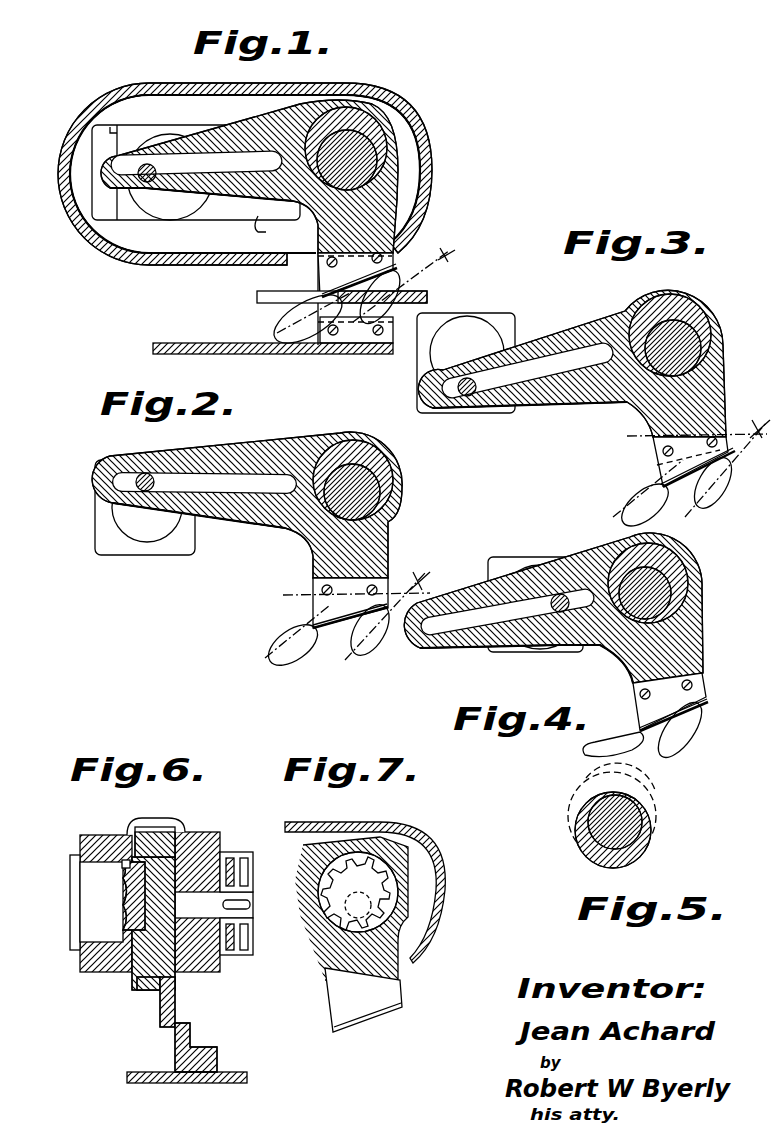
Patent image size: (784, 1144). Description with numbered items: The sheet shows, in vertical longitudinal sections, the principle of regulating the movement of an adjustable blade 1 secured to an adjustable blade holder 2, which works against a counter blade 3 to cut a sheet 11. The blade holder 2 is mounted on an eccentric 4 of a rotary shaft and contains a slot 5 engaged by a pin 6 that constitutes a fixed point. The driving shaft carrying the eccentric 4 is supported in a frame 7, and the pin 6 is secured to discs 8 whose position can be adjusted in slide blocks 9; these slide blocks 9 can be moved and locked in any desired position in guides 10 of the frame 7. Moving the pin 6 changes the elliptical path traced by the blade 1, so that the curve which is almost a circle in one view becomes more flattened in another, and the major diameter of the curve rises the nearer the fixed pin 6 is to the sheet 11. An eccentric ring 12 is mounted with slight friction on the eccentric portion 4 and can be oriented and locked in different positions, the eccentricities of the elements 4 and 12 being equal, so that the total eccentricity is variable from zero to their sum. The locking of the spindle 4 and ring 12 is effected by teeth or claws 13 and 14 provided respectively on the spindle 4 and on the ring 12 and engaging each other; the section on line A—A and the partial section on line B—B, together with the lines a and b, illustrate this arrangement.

In FIG. 1, the blade 1 is at (355, 275).
In FIG. 3, the blade 1 is at (697, 460).
In FIG. 2, the blade 1 is at (356, 603).
In FIG. 4, the blade 1 is at (669, 701).
In FIG. 6, the blade 1 is at (177, 1000).
In FIG. 7, the blade 1 is at (363, 1000).
In FIG. 1, the adjustable blade holder 2 is at (367, 216).
In FIG. 3, the adjustable blade holder 2 is at (648, 409).
In FIG. 2, the adjustable blade holder 2 is at (323, 549).
In FIG. 4, the adjustable blade holder 2 is at (628, 662).
In FIG. 6, the adjustable blade holder 2 is at (145, 985).
In FIG. 7, the adjustable blade holder 2 is at (340, 953).
In FIG. 1, the counter blade 3 is at (273, 335).
In FIG. 6, the counter blade 3 is at (192, 1030).
In FIG. 1, the eccentric 4 is at (373, 165).
In FIG. 3, the eccentric 4 is at (683, 338).
In FIG. 2, the eccentric 4 is at (367, 488).
In FIG. 4, the eccentric 4 is at (680, 592).
In FIG. 5, the eccentric 4 is at (623, 812).
In FIG. 6, the eccentric 4 is at (166, 902).
In FIG. 7, the eccentric 4 is at (355, 893).
In FIG. 1, the slot 5 is at (196, 164).
In FIG. 3, the slot 5 is at (527, 370).
In FIG. 2, the slot 5 is at (204, 485).
In FIG. 4, the slot 5 is at (507, 616).
In FIG. 1, the pin 6 is at (147, 182).
In FIG. 3, the pin 6 is at (470, 396).
In FIG. 2, the pin 6 is at (145, 476).
In FIG. 4, the pin 6 is at (560, 594).
In FIG. 1, the frame 7 is at (203, 86).
In FIG. 6, the frame 7 is at (100, 838).
In FIG. 7, the frame 7 is at (323, 822).
In FIG. 1, the discs 8 is at (177, 207).
In FIG. 3, the discs 8 is at (467, 353).
In FIG. 2, the discs 8 is at (160, 527).
In FIG. 4, the discs 8 is at (527, 562).
In FIG. 1, the slide blocks 9 is at (145, 130).
In FIG. 3, the slide blocks 9 is at (500, 320).
In FIG. 2, the slide blocks 9 is at (110, 540).
In FIG. 4, the slide blocks 9 is at (563, 655).
In FIG. 1, the guides 10 is at (112, 126).
In FIG. 1, the sheet 11 is at (429, 297).
In FIG. 1, the eccentric ring 12 is at (357, 123).
In FIG. 3, the eccentric ring 12 is at (680, 312).
In FIG. 2, the eccentric ring 12 is at (370, 463).
In FIG. 4, the eccentric ring 12 is at (663, 560).
In FIG. 5, the eccentric ring 12 is at (613, 866).
In FIG. 6, the eccentric ring 12 is at (165, 848).
In FIG. 7, the eccentric ring 12 is at (360, 855).
In FIG. 6, the teeth or claws 13 is at (128, 923).
In FIG. 7, the teeth or claws 13 is at (330, 868).
In FIG. 6, the teeth or claws 14 is at (126, 866).
In FIG. 7, the teeth or claws 14 is at (355, 867).
In FIG. 1, the needle line a is at (327, 283).
In FIG. 3, the needle line a is at (663, 477).
In FIG. 2, the needle line a is at (317, 617).
In FIG. 4, the needle line a is at (640, 721).
In FIG. 1, the needle line b is at (385, 268).
In FIG. 3, the needle line b is at (728, 456).
In FIG. 2, the needle line b is at (382, 600).
In FIG. 4, the needle line b is at (700, 692).
In FIG. 1, the section line A— A is at (341, 83).
In FIG. 6, the section line B— B is at (137, 793).